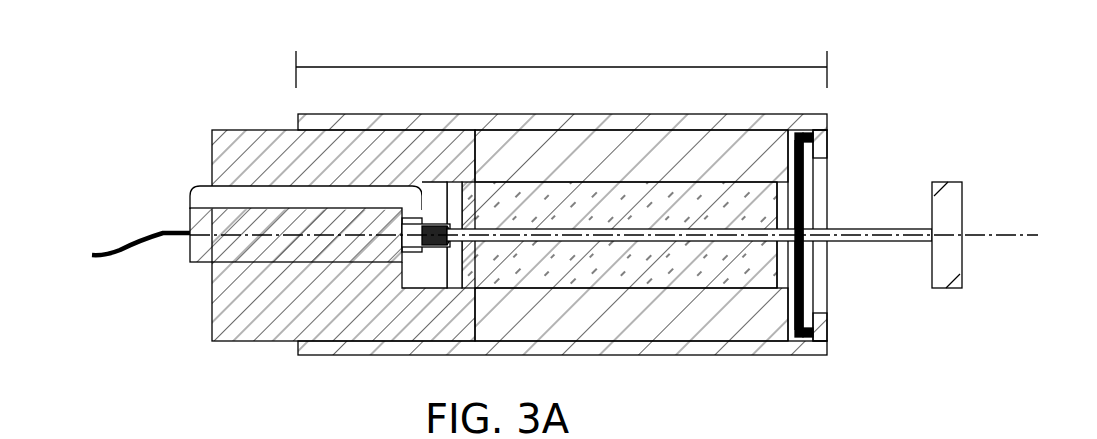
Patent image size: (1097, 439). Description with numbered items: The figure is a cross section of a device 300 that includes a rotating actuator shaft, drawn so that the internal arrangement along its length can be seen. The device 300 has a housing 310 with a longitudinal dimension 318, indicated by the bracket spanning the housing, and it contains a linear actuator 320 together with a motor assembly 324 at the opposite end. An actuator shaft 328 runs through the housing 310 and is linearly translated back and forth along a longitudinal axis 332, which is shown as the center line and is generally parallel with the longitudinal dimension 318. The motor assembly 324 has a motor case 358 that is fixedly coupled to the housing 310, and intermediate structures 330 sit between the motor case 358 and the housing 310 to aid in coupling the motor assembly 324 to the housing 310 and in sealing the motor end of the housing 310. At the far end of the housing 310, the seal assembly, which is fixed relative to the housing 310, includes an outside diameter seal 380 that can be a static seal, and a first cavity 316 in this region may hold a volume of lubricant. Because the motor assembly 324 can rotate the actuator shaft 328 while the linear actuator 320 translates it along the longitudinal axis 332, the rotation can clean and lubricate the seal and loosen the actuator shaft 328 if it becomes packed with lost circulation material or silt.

The device 300 is at (578, 217).
The housing 310 is at (483, 114).
The first cavity 316 is at (786, 264).
The longitudinal dimension 318 is at (540, 66).
The linear actuator 320 is at (423, 368).
The motor assembly 324 is at (299, 186).
The actuator shaft 328 is at (878, 229).
The intermediate structures 330 is at (242, 328).
The longitudinal axis 332 is at (1032, 234).
The motor case 358 is at (198, 263).
The outside diameter seal 380 is at (813, 136).